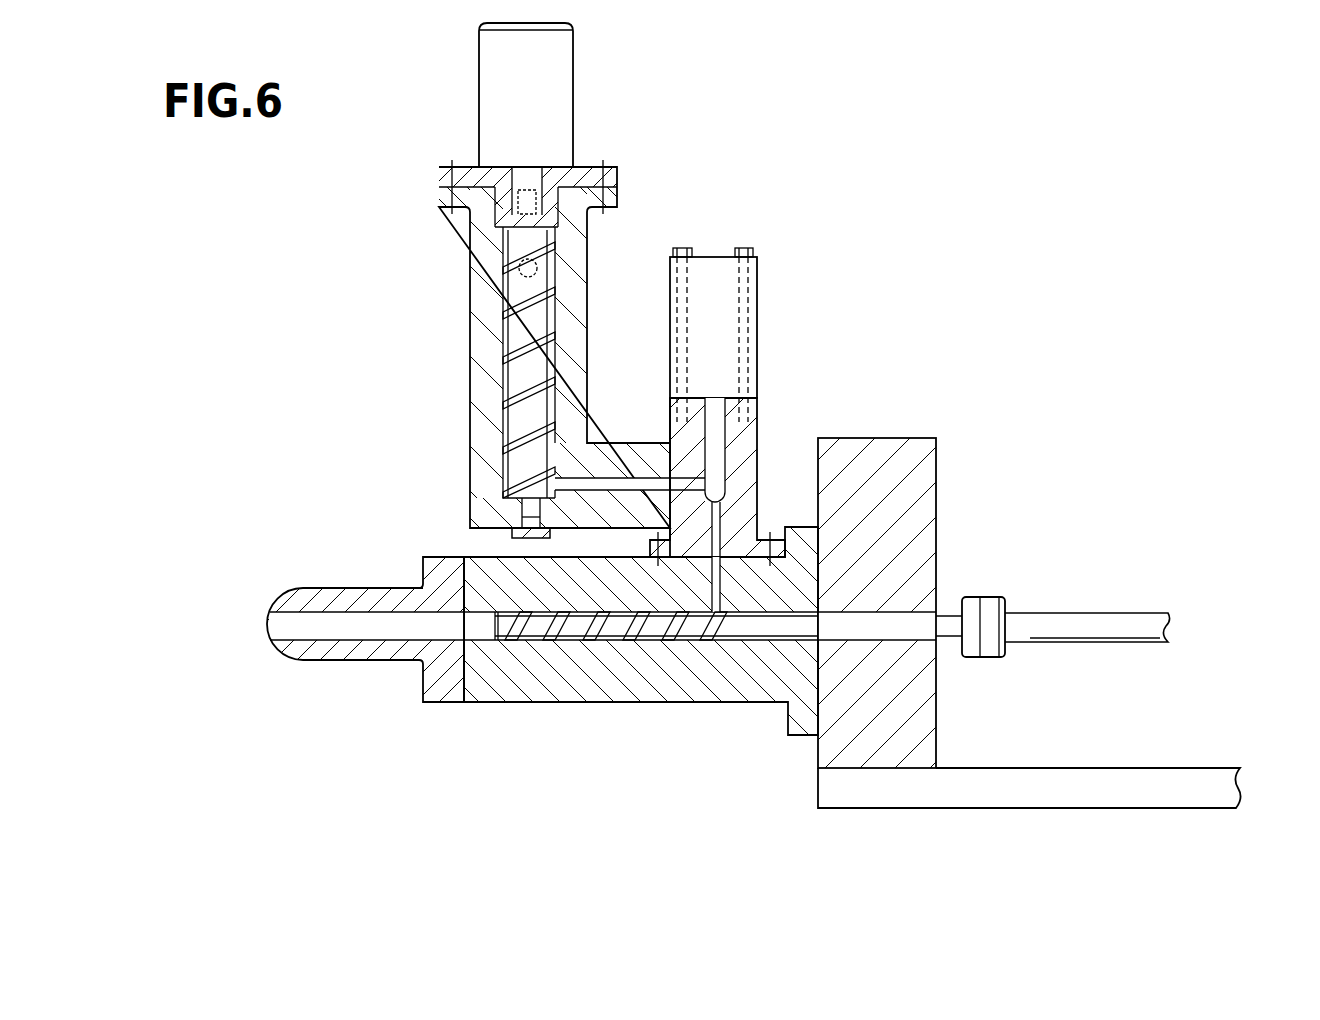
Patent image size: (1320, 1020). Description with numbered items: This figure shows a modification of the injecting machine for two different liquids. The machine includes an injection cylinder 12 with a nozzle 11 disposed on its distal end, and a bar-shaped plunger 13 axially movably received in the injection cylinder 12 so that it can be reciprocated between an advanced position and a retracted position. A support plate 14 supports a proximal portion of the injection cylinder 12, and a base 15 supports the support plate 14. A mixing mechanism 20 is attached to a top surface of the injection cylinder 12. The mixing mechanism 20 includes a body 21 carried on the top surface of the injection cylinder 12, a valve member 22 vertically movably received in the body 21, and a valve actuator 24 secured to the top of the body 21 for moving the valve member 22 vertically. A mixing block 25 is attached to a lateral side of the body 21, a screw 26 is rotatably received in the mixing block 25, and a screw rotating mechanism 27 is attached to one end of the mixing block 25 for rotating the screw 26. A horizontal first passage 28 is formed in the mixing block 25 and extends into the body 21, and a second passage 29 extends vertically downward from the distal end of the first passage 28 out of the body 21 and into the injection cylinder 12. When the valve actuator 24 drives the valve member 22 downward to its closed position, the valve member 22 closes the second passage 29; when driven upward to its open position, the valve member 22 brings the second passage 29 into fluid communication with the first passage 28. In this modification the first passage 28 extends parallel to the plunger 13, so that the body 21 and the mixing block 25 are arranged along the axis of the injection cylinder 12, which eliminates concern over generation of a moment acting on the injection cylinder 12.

The nozzle 11 is at (372, 650).
The injection cylinder 12 is at (570, 698).
The plunger 13 is at (644, 643).
The support plate 14 is at (937, 470).
The base 15 is at (1030, 790).
The mixing mechanism 20 is at (688, 183).
The body 21 is at (755, 427).
The valve member 22 is at (713, 465).
The valve actuator 24 is at (757, 320).
The mixing block 25 is at (488, 424).
The screw 26 is at (525, 326).
The screw rotating mechanism 27 is at (495, 100).
The first passage 28 is at (630, 482).
The second passage 29 is at (722, 643).